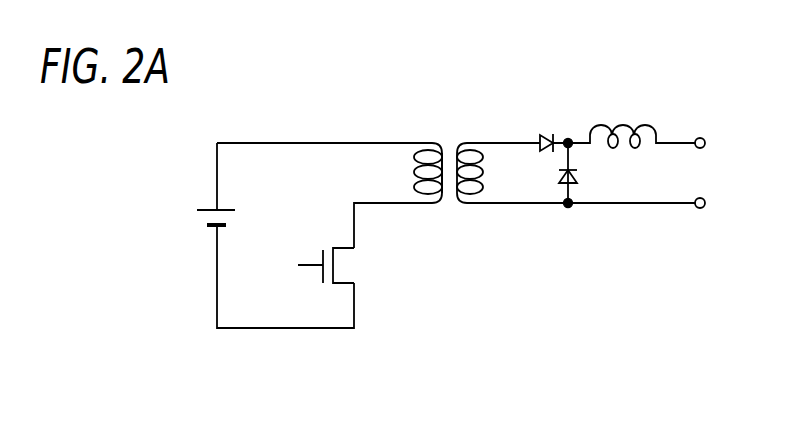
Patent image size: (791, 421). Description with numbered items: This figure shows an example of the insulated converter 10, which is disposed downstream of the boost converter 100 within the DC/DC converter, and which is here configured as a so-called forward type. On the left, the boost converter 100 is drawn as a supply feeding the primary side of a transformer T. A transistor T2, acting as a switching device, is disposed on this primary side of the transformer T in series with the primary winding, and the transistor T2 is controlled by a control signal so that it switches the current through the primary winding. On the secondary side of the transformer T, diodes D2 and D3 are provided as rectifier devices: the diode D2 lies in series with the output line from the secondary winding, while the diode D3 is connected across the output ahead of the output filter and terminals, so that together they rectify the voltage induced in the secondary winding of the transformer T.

The insulated converter 10 is at (484, 103).
The boost converter 100 is at (204, 218).
The transformer T is at (447, 140).
The transistor T2 is at (342, 265).
The diode D2 is at (550, 129).
The diode D3 is at (584, 173).